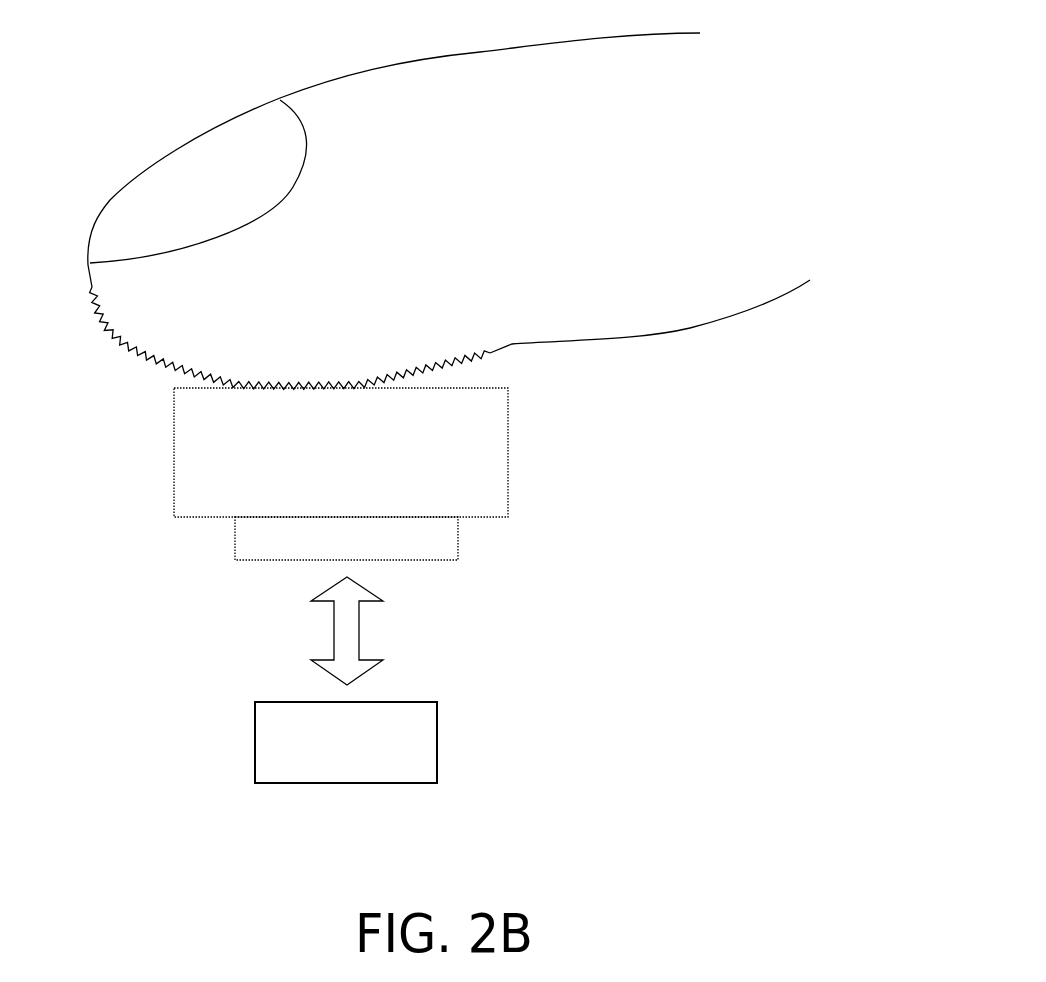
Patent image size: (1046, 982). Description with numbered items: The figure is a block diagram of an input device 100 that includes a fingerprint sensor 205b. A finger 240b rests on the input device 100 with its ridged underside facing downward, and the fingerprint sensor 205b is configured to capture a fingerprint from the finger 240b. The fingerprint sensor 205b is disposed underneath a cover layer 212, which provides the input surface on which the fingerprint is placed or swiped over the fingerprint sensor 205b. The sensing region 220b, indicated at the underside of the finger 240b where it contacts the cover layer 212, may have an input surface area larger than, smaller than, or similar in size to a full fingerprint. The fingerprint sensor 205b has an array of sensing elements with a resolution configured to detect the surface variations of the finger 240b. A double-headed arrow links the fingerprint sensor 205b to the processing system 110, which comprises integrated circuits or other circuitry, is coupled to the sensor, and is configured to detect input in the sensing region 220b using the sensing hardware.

The input device 100 is at (132, 96).
The sensing region 220b is at (136, 372).
The finger 240b is at (690, 328).
The cover layer 212 is at (508, 472).
The fingerprint sensor 205b is at (458, 550).
The processing system 110 is at (255, 752).